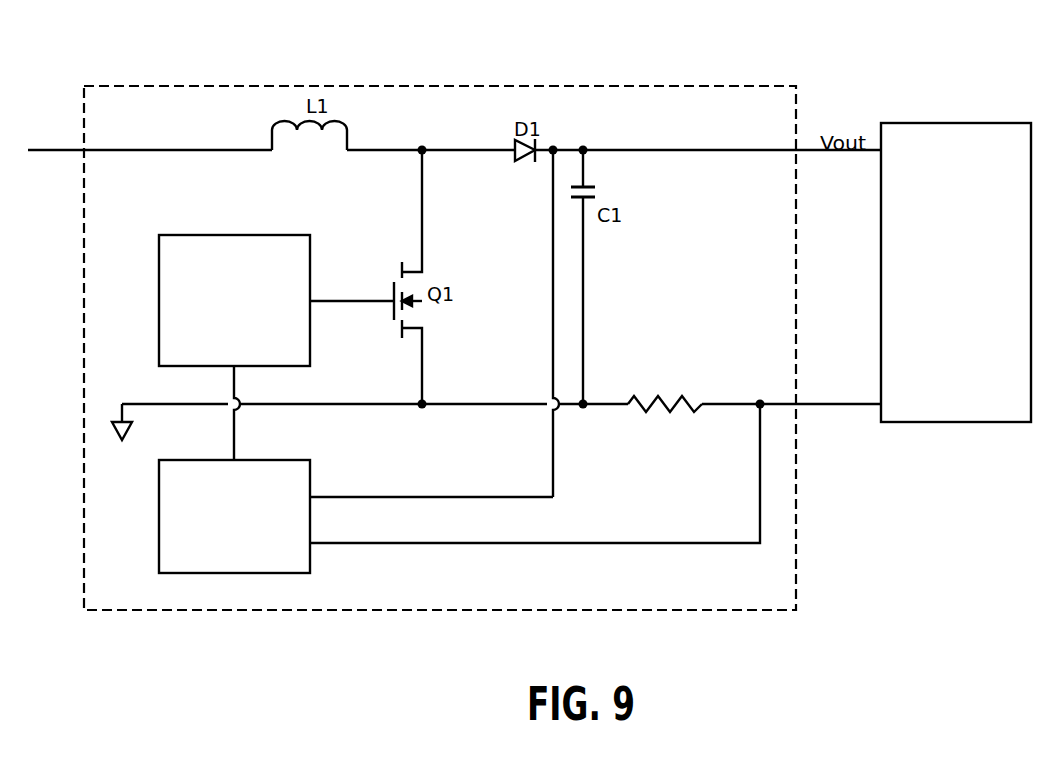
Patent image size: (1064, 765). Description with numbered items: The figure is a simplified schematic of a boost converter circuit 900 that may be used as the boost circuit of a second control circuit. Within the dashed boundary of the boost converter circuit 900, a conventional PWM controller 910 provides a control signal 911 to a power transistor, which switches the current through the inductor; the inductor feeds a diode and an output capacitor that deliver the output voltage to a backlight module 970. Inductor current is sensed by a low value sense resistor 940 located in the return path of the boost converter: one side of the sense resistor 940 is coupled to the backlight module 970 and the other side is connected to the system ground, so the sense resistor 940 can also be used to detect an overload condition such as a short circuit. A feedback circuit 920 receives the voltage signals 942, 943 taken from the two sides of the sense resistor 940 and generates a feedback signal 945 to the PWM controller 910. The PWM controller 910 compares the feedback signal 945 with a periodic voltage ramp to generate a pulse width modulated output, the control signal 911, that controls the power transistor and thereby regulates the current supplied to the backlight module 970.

The boost converter circuit 900 is at (703, 65).
The PWM controller 910 is at (293, 266).
The control signal 911 is at (352, 289).
The feedback circuit 920 is at (293, 564).
The resistor Rsense 940 is at (671, 407).
The voltage signal 942 is at (431, 485).
The voltage signal 943 is at (535, 474).
The feedback signal 945 is at (262, 413).
The backlight module 970 is at (1016, 170).